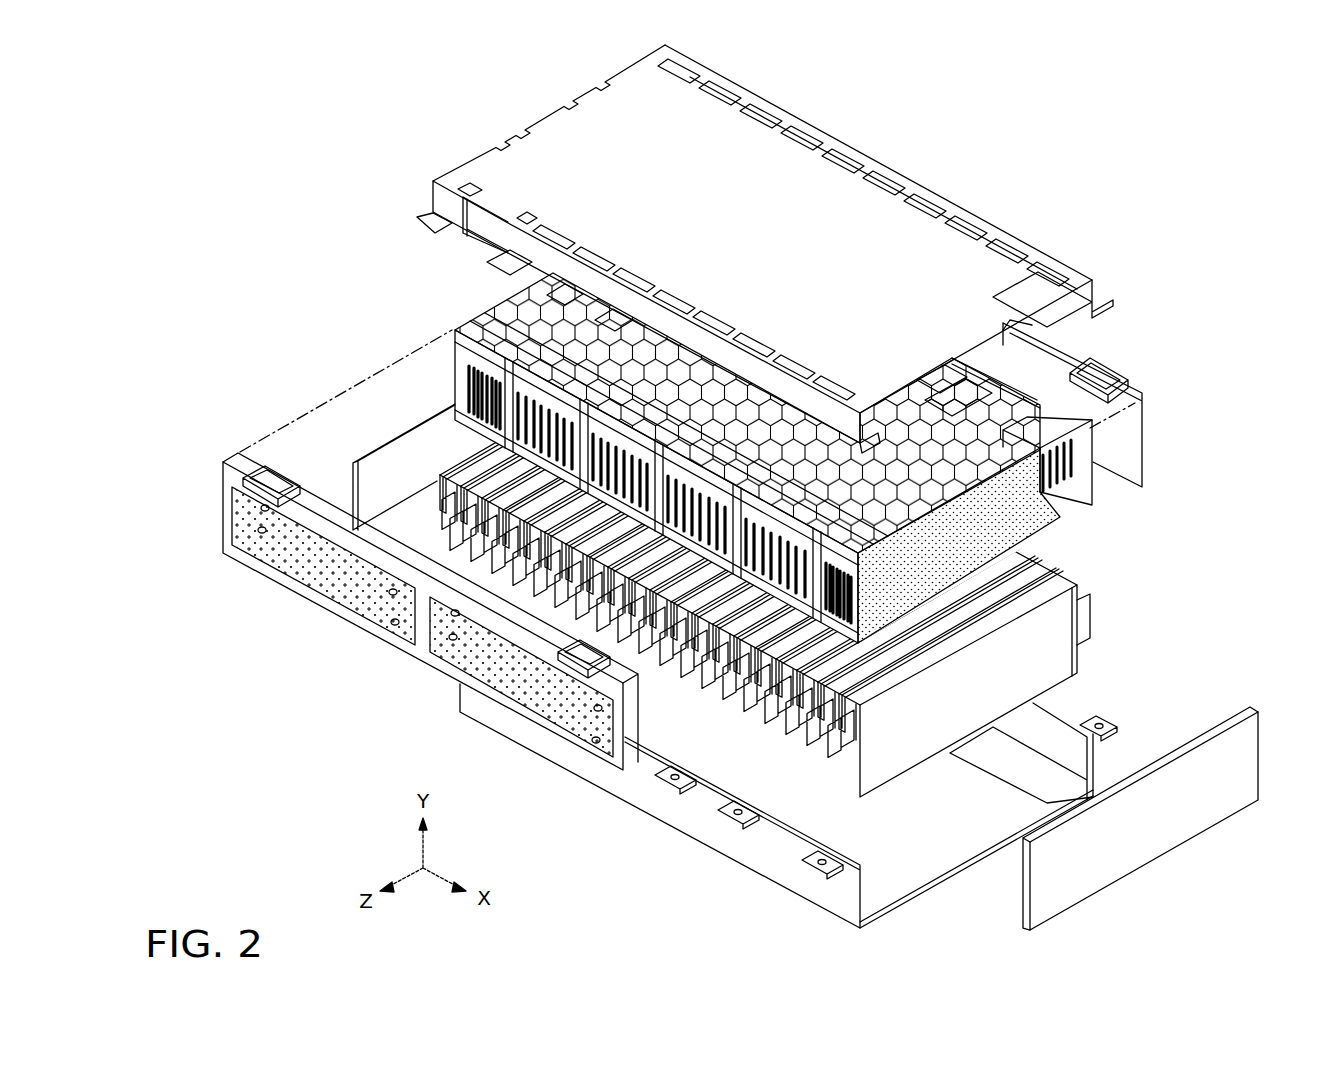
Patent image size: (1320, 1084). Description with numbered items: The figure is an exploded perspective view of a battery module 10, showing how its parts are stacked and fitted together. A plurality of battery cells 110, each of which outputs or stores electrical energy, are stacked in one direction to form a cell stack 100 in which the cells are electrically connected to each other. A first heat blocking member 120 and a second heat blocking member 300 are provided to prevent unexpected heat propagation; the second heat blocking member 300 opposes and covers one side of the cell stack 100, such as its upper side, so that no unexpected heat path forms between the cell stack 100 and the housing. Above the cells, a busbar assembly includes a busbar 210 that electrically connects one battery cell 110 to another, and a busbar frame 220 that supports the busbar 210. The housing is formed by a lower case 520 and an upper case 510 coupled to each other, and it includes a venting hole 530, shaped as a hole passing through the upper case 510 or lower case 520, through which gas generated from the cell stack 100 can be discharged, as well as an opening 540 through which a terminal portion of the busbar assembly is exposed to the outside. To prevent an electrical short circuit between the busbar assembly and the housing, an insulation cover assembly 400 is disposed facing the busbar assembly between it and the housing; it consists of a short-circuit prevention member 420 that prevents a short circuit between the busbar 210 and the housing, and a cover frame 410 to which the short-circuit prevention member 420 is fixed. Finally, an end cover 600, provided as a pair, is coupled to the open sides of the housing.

The battery module 10 is at (343, 131).
The cell stack 100 is at (1080, 645).
The battery cell 110 is at (1072, 672).
The first heat blocking member 120 is at (820, 767).
The busbar 210 is at (463, 373).
The busbar frame 220 is at (497, 303).
The second heat blocking member 300 is at (1037, 510).
The insulation cover assembly 400 is at (272, 458).
The cover frame 410 is at (327, 607).
The short-circuit prevention member 420 is at (443, 650).
The upper case 510 is at (840, 200).
The lower case 520 is at (947, 853).
The venting hole 530 is at (780, 118).
The opening 540 is at (488, 215).
The end cover 600 is at (388, 462).